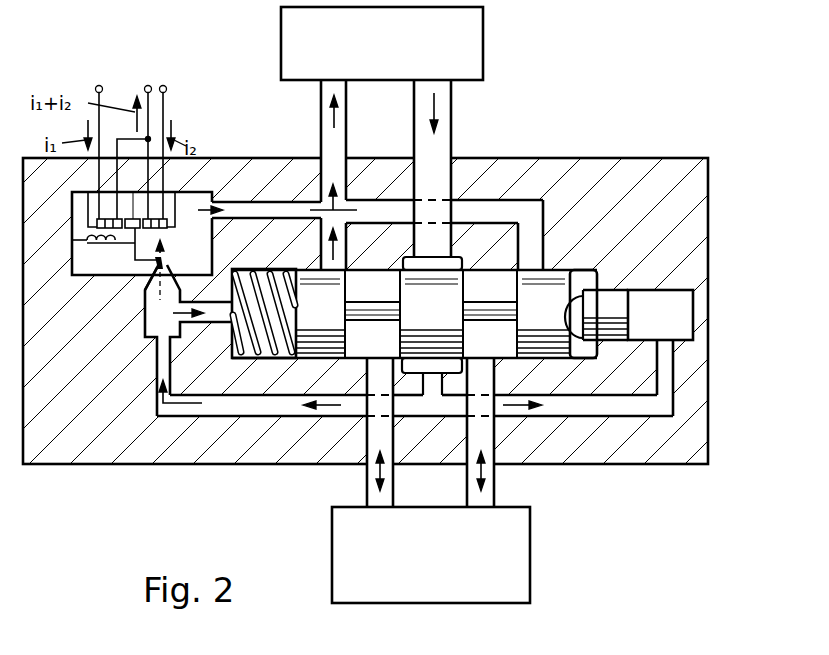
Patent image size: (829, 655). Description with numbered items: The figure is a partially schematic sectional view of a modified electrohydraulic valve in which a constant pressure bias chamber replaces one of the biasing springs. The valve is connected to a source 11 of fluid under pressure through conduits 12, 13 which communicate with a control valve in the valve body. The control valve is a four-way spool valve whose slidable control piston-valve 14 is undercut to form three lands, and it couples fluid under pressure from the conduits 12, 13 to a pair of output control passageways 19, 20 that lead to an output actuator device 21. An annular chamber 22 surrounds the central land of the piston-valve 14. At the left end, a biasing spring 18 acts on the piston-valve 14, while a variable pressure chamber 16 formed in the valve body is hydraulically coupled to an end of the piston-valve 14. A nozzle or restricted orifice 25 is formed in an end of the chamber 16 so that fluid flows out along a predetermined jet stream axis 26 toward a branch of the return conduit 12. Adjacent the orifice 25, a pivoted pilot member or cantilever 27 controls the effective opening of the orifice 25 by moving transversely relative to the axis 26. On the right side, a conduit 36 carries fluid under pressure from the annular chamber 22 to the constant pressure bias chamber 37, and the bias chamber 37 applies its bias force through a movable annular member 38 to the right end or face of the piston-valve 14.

The source of fluid 11 is at (473, 59).
The conduit 12 is at (327, 139).
The conduit 13 is at (447, 139).
The control piston-valve 14 is at (543, 277).
The variable pressure chamber 16 is at (150, 309).
The biasing spring 18 is at (256, 358).
The output control passageway 19 is at (367, 483).
The output control passageway 20 is at (494, 483).
The output actuator device 21 is at (518, 530).
The annular chamber 22 is at (460, 267).
The nozzle or restricted orifice 25 is at (164, 265).
The jet stream axis 26 is at (163, 257).
The pilot member or cantilever 27 is at (133, 256).
The conduit 36 is at (577, 412).
The constant pressure bias chamber 37 is at (680, 310).
The movable annular member 38 is at (605, 300).